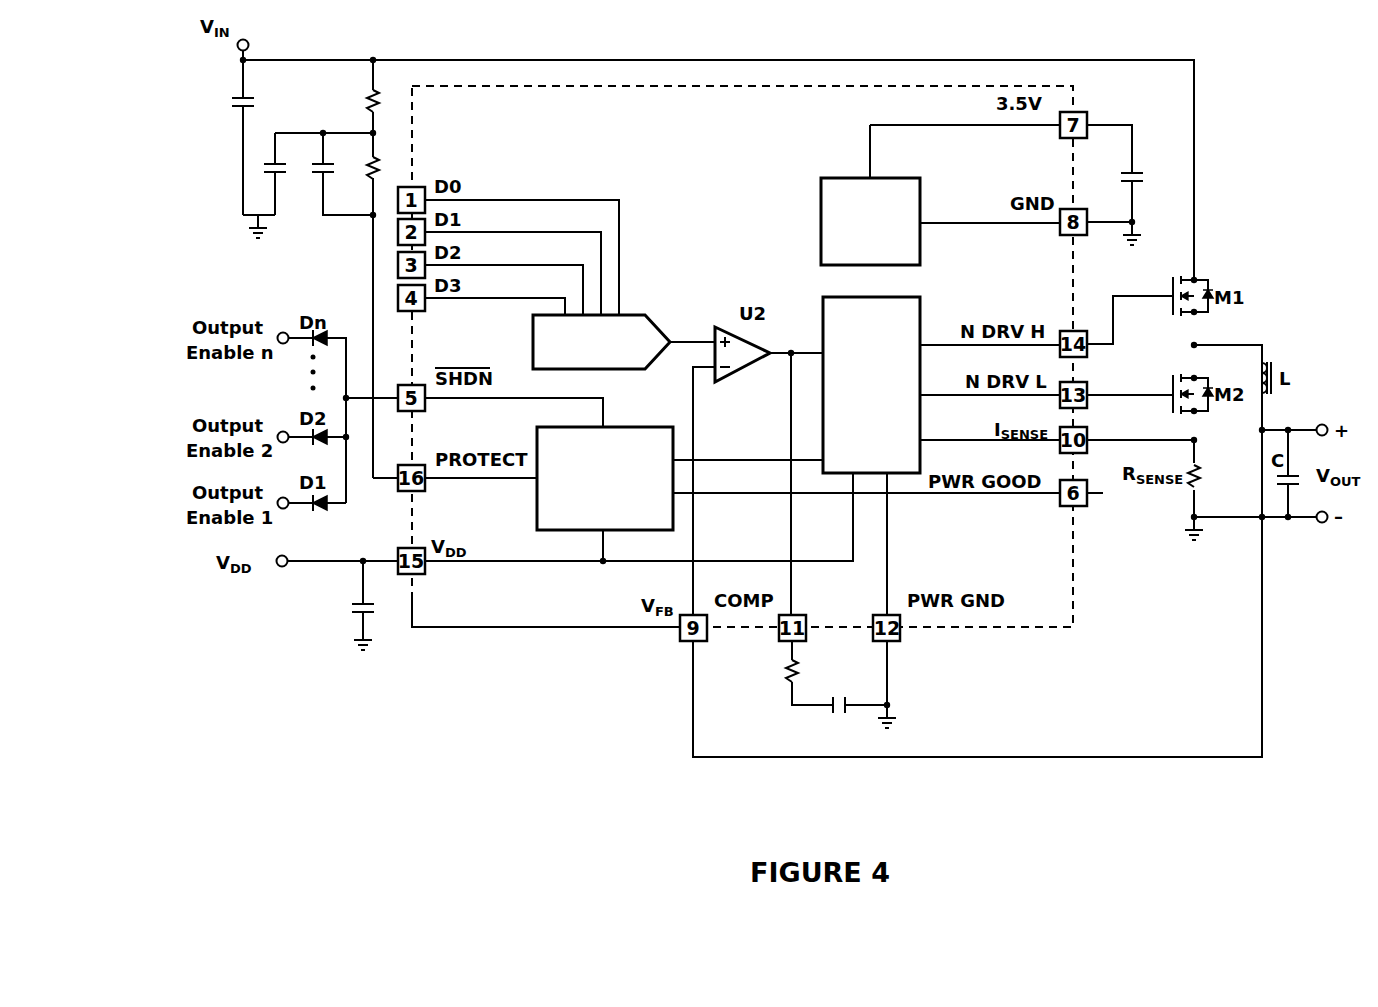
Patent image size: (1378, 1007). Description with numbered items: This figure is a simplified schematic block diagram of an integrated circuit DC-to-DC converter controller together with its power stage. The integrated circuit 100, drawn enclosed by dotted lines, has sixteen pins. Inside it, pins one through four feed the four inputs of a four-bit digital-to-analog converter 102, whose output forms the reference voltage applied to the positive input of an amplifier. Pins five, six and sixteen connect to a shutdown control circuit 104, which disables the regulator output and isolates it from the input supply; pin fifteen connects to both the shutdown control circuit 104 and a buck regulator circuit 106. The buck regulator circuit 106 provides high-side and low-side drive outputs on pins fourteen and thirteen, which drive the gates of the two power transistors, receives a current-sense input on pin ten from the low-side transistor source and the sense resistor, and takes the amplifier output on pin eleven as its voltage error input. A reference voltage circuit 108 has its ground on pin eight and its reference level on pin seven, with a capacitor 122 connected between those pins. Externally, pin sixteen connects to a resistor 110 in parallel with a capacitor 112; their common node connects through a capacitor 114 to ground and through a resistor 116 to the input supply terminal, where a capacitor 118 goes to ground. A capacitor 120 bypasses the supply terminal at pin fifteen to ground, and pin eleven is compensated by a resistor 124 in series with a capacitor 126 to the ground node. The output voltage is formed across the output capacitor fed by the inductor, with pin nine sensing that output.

The integrated circuit 100 is at (532, 635).
The 4-bit digital-to-analog converter 102 is at (650, 302).
The shutdown control circuit 104 is at (632, 421).
The buck regulator circuit 106 is at (922, 327).
The reference voltage circuit 108 is at (820, 222).
The resistor 110 is at (383, 173).
The capacitor 112 is at (333, 170).
The capacitor 114 is at (283, 168).
The resistor 116 is at (363, 104).
The capacitor 118 is at (250, 104).
The capacitor 120 is at (339, 605).
The capacitor 122 is at (1110, 177).
The resistor 124 is at (787, 673).
The capacitor 126 is at (853, 690).